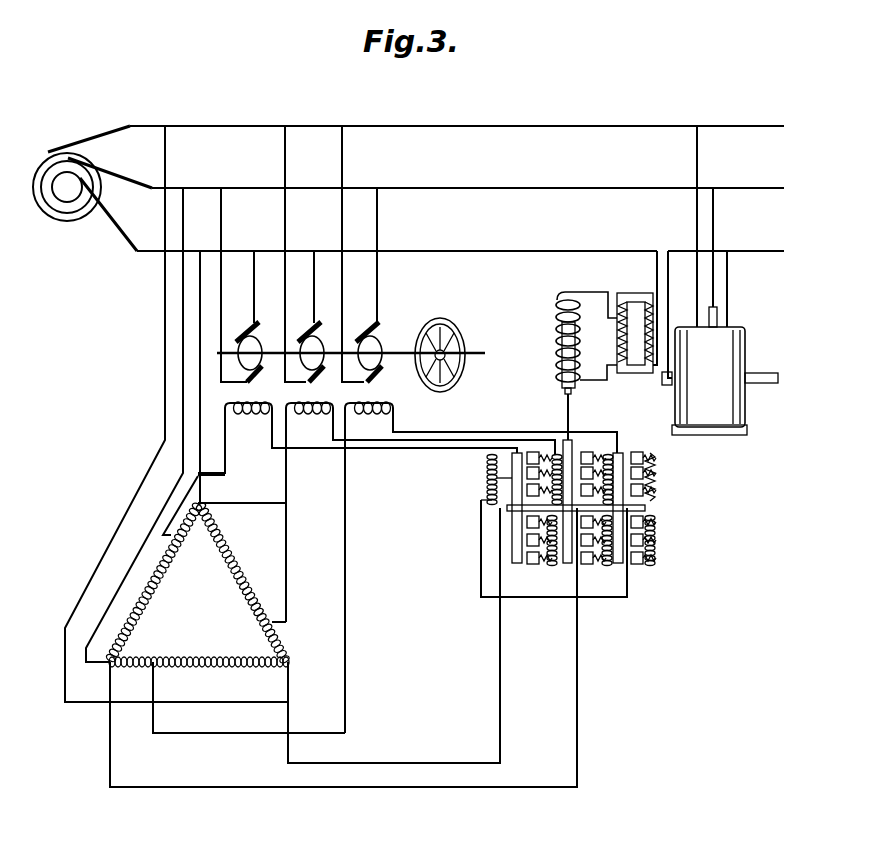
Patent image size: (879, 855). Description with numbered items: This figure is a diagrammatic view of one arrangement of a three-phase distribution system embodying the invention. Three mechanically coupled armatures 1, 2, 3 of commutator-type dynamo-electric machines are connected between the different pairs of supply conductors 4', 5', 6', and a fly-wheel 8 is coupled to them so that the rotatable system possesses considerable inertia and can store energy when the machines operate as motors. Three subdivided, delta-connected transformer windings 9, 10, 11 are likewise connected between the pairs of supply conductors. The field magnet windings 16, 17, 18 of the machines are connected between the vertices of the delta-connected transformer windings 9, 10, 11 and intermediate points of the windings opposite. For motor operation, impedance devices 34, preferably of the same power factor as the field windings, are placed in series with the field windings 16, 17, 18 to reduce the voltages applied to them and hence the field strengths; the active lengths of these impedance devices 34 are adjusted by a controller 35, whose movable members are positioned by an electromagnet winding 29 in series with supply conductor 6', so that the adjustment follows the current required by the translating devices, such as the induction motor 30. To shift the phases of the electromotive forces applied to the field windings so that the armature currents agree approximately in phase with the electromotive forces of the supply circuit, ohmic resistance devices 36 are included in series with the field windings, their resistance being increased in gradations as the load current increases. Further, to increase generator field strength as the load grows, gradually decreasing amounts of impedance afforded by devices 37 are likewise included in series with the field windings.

The armature 1 is at (254, 350).
The armature 2 is at (315, 350).
The armature 3 is at (374, 350).
The supply circuit conductor 4' is at (457, 140).
The supply circuit conductor 5' is at (468, 202).
The supply circuit conductor 6' is at (460, 265).
The fly-wheel 8 is at (452, 342).
The delta-connected transformer winding 9 is at (154, 582).
The delta-connected transformer winding 10 is at (242, 583).
The delta-connected transformer winding 11 is at (199, 649).
The field magnet winding 16 is at (357, 437).
The field magnet winding 17 is at (420, 512).
The field magnet winding 18 is at (481, 567).
The electromagnet winding 29 is at (556, 340).
The induction motor 30 is at (720, 371).
The impedance device 34 is at (561, 563).
The controller 35 is at (591, 450).
The ohmic resistance device 36 is at (652, 482).
The impedance device 37 is at (487, 470).